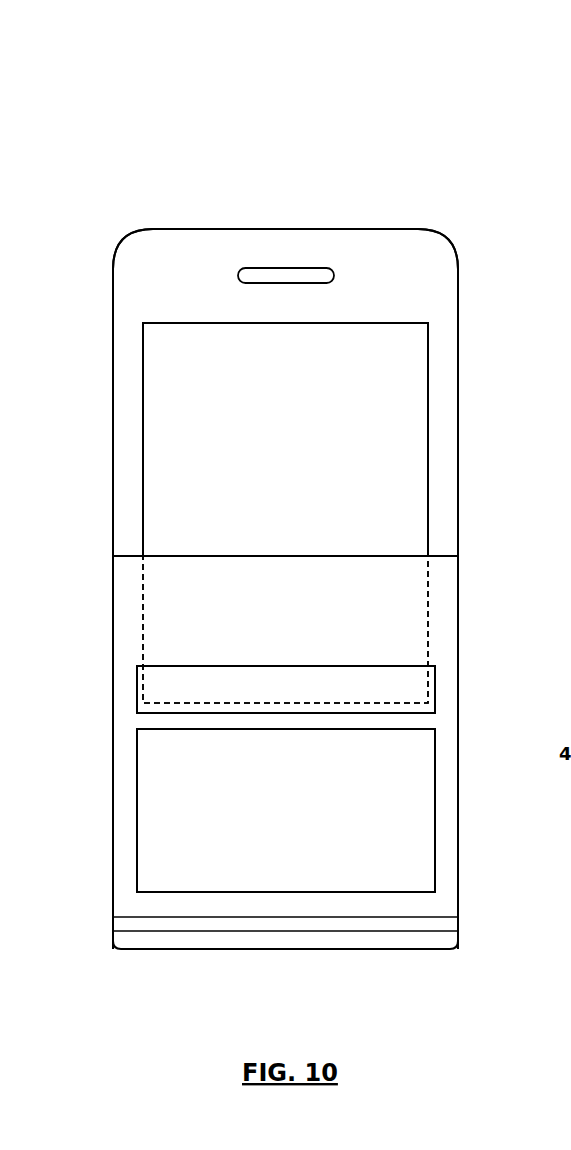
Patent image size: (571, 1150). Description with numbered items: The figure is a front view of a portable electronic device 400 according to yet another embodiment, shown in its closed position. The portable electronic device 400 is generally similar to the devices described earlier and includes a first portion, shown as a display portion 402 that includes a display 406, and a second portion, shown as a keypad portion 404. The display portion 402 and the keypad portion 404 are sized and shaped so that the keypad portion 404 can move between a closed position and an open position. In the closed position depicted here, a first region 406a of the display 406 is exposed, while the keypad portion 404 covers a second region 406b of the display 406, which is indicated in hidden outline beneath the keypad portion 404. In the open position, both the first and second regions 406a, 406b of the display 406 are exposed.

The portable electronic device 400 is at (184, 127).
The display portion 402 is at (380, 228).
The keypad portion 404 is at (168, 912).
The display 406 is at (396, 440).
The first region 406a is at (183, 441).
The second region 406b is at (183, 632).